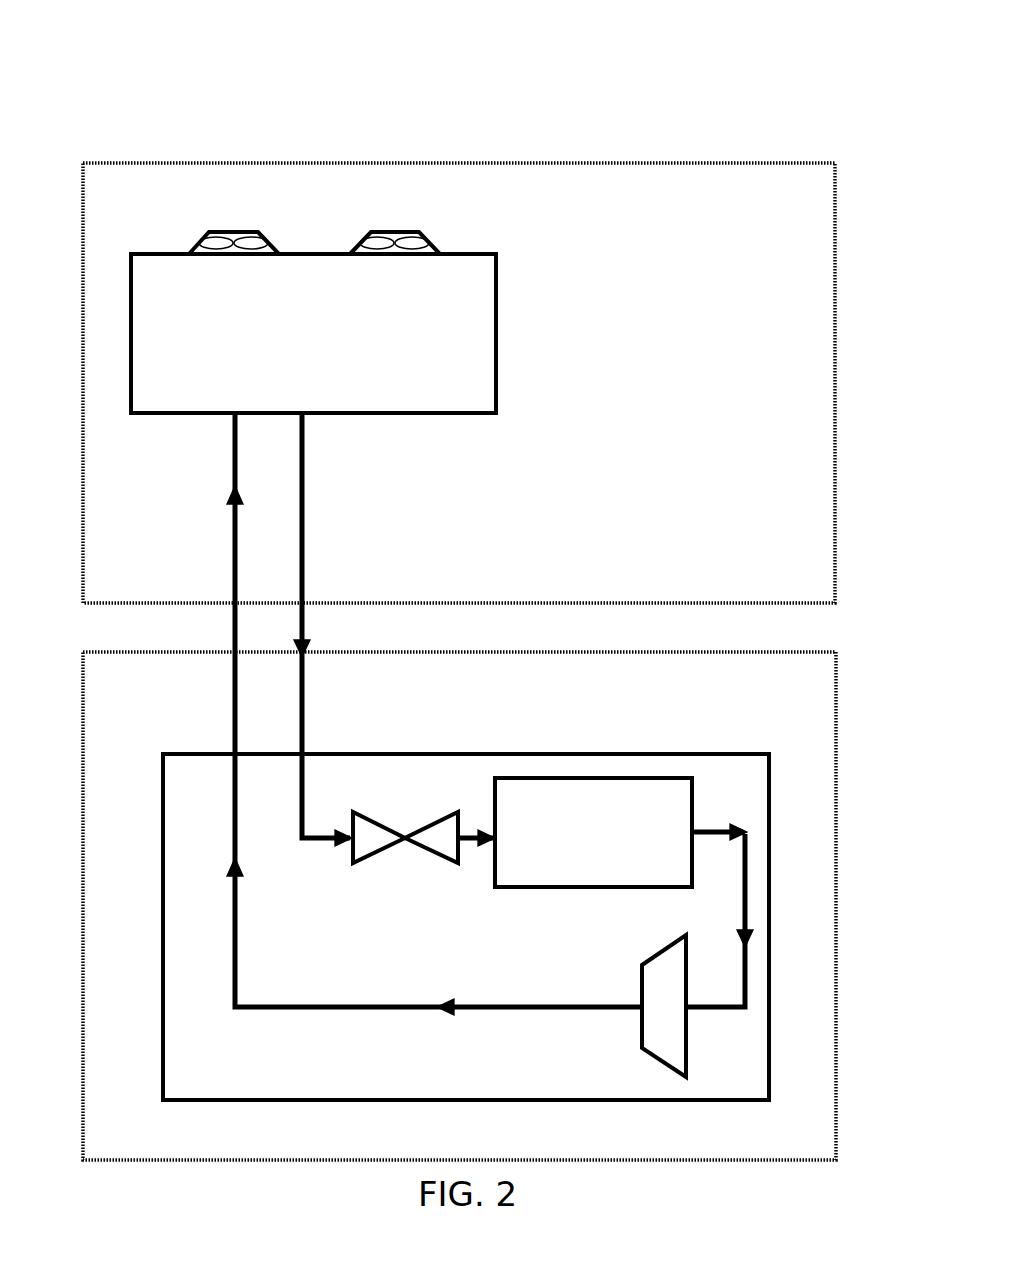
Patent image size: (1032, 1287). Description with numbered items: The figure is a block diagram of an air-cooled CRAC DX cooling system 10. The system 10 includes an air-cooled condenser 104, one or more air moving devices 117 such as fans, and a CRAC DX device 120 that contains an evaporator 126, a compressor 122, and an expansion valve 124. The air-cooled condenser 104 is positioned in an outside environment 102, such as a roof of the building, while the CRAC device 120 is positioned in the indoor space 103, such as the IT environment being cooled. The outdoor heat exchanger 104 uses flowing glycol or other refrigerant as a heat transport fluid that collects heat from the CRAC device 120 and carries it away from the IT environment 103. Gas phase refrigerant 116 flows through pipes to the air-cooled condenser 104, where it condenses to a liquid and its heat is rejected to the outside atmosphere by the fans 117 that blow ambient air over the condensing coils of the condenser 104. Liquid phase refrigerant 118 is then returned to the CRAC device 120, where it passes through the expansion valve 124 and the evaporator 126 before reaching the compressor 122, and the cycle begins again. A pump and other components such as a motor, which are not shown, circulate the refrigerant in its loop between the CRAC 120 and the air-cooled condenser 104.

The air-cooled CRAC DX cooling system 10 is at (85, 100).
The outside environment 102 is at (836, 300).
The indoor space 103 is at (838, 722).
The air-cooled condenser 104 is at (499, 299).
The gas phase refrigerant 116 is at (502, 1011).
The air moving devices 117 is at (265, 242).
The liquid phase refrigerant 118 is at (310, 508).
The CRAC DX device 120 is at (420, 753).
The compressor 122 is at (640, 979).
The expansion valve 124 is at (403, 843).
The evaporator 126 is at (590, 778).